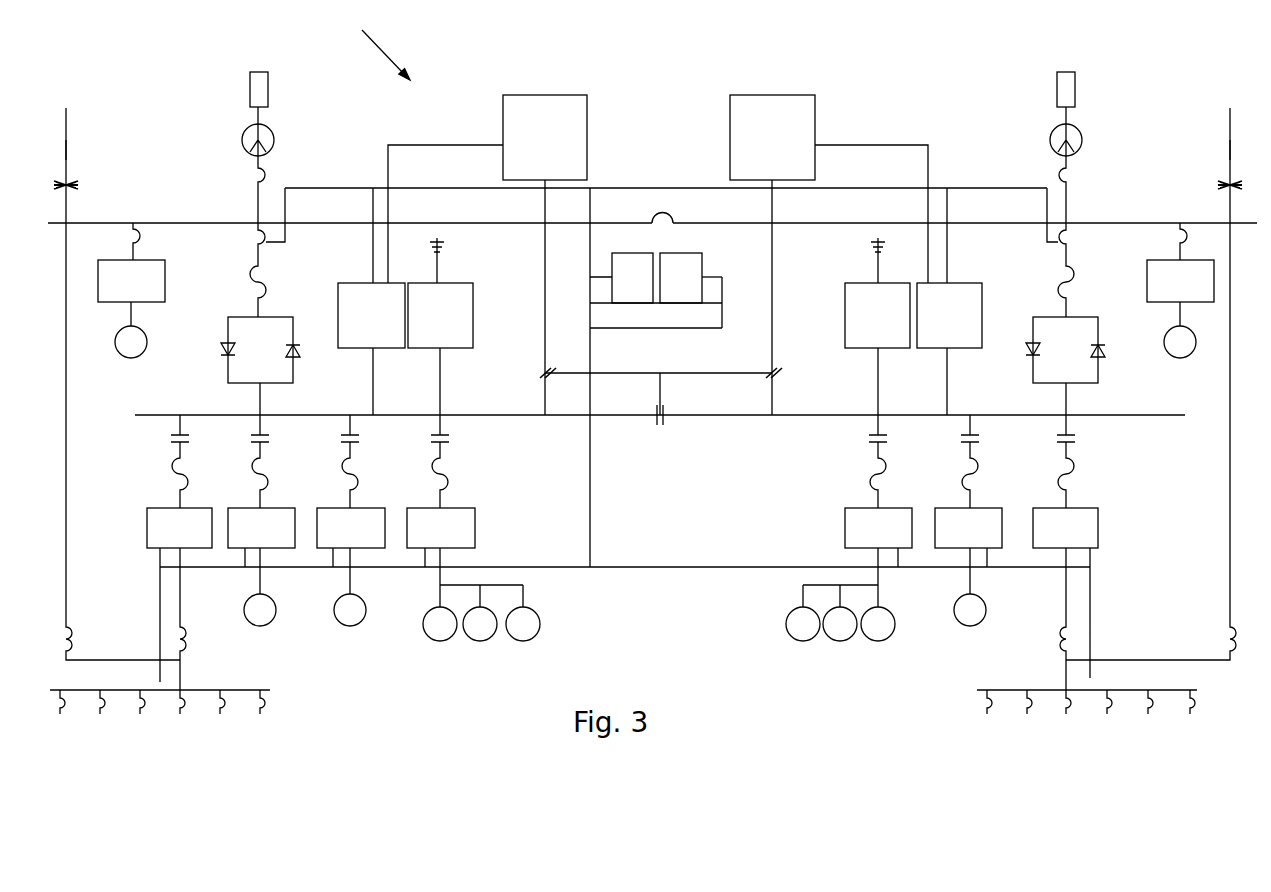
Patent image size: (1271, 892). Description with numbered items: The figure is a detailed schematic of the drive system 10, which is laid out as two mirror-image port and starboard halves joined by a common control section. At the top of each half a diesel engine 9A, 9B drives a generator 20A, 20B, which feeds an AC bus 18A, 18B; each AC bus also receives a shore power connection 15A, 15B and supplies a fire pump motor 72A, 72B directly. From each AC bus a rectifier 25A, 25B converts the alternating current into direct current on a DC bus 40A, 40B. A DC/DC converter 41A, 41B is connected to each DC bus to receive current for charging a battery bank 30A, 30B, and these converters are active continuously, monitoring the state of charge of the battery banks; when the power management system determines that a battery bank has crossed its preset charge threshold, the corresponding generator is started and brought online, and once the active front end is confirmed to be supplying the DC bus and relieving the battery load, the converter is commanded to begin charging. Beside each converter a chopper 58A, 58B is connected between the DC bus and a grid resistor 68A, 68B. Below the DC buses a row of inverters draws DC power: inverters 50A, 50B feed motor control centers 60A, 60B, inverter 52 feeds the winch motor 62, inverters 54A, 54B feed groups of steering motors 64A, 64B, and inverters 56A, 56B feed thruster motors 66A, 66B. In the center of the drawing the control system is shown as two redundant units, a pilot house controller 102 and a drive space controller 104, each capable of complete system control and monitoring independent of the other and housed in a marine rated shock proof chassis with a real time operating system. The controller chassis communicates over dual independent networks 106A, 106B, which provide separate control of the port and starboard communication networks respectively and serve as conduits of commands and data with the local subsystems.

The drive system 10 is at (374, 45).
The diesel engine 9A is at (250, 90).
The diesel engine 9B is at (1057, 90).
The shore power connection 15A is at (70, 152).
The shore power connection 15B is at (1226, 152).
The AC bus 18A is at (185, 222).
The AC bus 18B is at (1127, 222).
The generator 20A is at (242, 140).
The generator 20B is at (1050, 140).
The rectifier 25A is at (228, 325).
The rectifier 25B is at (1098, 322).
The battery bank 30A is at (503, 128).
The battery bank 30B is at (815, 125).
The DC bus 40A is at (497, 416).
The DC bus 40B is at (715, 416).
The DC/DC converter 41A is at (338, 305).
The DC/DC converter 41B is at (982, 305).
The inverter 50A is at (160, 508).
The inverter 50B is at (1045, 508).
The inverter 52 is at (240, 508).
The inverter 54A is at (425, 508).
The inverter 54B is at (860, 508).
The inverter 56A is at (333, 508).
The inverter 56B is at (948, 508).
The chopper 58A is at (473, 310).
The chopper 58B is at (845, 310).
The motor control center 60A is at (205, 688).
The motor control center 60B is at (1007, 688).
The winch motor 62 is at (262, 627).
The steering motors 64A is at (512, 590).
The steering motors 64B is at (803, 589).
The thruster motor 66A is at (354, 627).
The thruster motor 66B is at (974, 627).
The grid resistor 68A is at (444, 256).
The grid resistor 68B is at (870, 253).
The fire pump motor 72A is at (129, 322).
The fire pump motor 72B is at (1178, 322).
The pilot house controller 102 is at (634, 248).
The drive space controller 104 is at (684, 253).
The network 106A is at (318, 182).
The network 106B is at (965, 182).